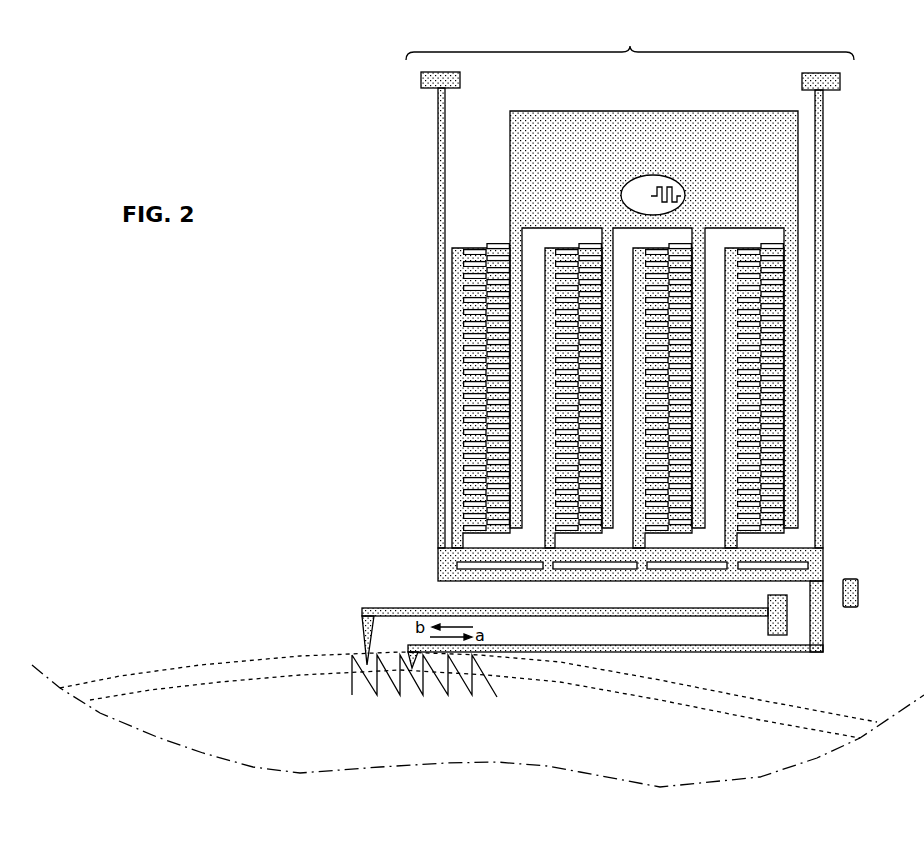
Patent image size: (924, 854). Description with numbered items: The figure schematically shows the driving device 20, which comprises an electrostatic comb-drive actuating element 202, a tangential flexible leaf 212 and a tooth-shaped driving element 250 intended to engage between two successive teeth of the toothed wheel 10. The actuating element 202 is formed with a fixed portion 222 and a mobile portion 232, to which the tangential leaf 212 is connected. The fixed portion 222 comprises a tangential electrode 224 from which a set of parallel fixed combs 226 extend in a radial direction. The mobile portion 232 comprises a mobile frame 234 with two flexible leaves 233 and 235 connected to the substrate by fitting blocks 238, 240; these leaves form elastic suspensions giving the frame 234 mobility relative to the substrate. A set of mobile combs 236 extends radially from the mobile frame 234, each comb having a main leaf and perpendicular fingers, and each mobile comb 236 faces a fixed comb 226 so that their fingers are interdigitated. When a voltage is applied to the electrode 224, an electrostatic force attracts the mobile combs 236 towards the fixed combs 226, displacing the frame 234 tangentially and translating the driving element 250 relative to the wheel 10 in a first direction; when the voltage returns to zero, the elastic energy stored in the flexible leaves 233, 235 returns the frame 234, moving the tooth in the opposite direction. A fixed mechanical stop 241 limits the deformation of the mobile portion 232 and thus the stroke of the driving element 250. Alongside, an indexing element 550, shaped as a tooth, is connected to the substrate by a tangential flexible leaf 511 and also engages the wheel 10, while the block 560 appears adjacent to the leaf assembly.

The toothed wheel 10 is at (262, 700).
The driving device 20 is at (603, 358).
The actuating element 202 is at (630, 42).
The tangential flexible leaf 212 is at (770, 653).
The fixed portion 222 is at (629, 302).
The tangential electrode 224 is at (742, 133).
The fixed combs 226 is at (587, 415).
The mobile portion 232 is at (644, 595).
The flexible leaf 233 is at (437, 396).
The mobile frame 234 is at (447, 565).
The flexible leaf 235 is at (824, 370).
The mobile combs 236 is at (457, 495).
The fitting block 238 is at (421, 80).
The fitting block 240 is at (840, 83).
The fixed mechanical stop 241 is at (858, 597).
The driving element 250 is at (403, 650).
The tangential flexible leaf 511 is at (390, 608).
The indexing element 550 is at (362, 648).
The anchor block 560 is at (768, 606).